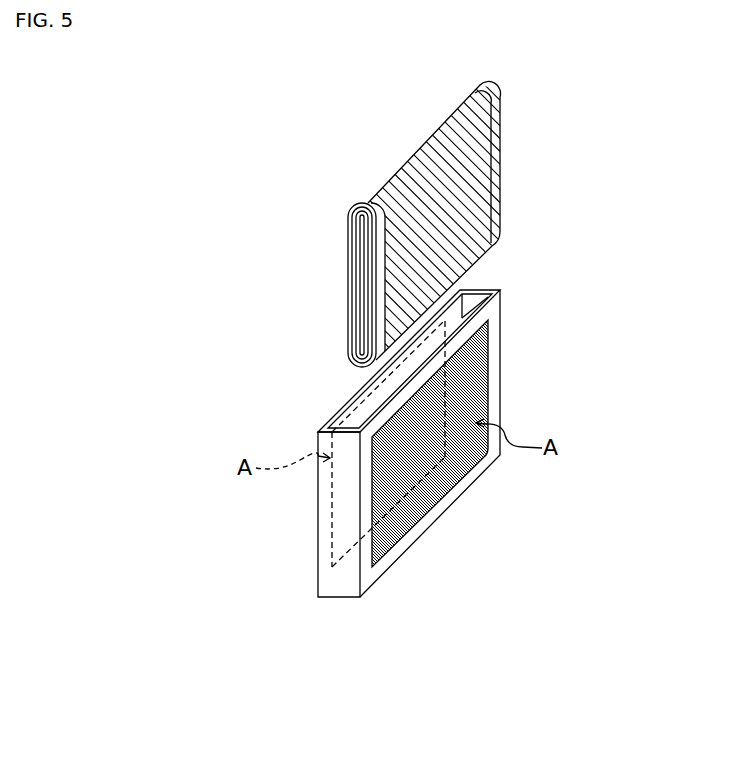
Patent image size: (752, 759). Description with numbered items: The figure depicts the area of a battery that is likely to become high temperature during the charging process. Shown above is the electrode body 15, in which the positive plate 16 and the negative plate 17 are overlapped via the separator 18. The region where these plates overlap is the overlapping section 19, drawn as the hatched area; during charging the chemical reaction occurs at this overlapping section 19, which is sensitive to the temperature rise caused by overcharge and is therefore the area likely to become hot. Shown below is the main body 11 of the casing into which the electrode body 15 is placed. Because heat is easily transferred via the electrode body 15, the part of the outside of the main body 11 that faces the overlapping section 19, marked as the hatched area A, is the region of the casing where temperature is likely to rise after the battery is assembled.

The main body 11 is at (497, 367).
The electrode body 15 is at (395, 244).
The positive plate 16 is at (497, 108).
The negative plate 17 is at (363, 203).
The separator 18 is at (425, 143).
The overlapping section 19 is at (457, 203).